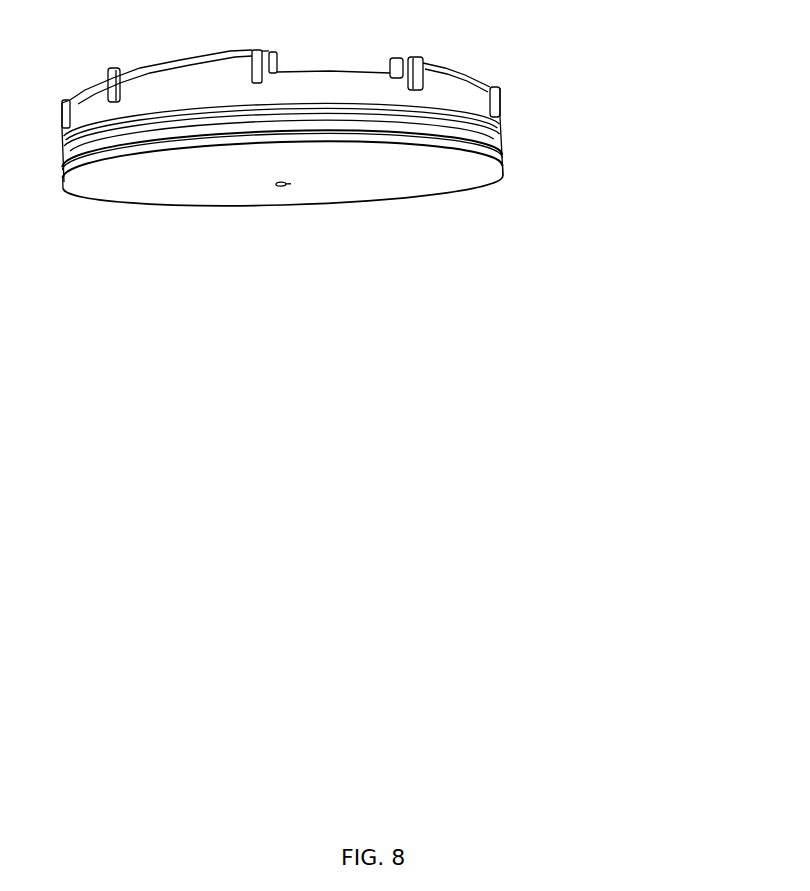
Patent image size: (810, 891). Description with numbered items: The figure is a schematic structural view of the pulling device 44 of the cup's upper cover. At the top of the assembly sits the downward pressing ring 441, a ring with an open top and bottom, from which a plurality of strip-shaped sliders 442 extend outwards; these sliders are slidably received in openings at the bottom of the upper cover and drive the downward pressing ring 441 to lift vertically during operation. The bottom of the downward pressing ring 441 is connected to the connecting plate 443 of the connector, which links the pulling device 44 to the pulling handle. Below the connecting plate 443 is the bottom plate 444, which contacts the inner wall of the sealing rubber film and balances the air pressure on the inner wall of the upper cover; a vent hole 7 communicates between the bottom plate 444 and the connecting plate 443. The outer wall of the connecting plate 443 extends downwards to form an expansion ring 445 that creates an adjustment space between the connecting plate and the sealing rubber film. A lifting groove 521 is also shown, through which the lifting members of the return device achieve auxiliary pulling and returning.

The pulling device 44 is at (718, 180).
The strip-shaped slider 442 is at (500, 103).
The downward pressing ring 441 is at (487, 106).
The expansion ring 445 is at (505, 143).
The connecting plate 443 is at (503, 177).
The bottom plate 444 is at (413, 183).
The lifting groove 521 is at (277, 70).
The vent hole 7 is at (284, 187).